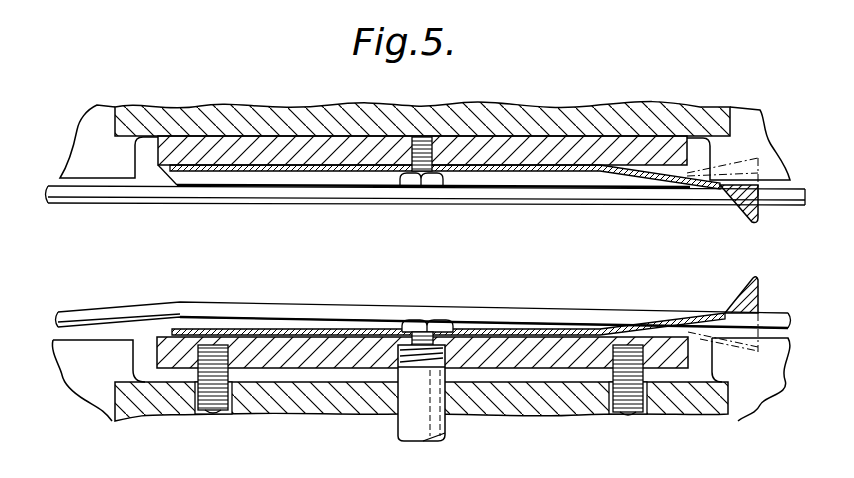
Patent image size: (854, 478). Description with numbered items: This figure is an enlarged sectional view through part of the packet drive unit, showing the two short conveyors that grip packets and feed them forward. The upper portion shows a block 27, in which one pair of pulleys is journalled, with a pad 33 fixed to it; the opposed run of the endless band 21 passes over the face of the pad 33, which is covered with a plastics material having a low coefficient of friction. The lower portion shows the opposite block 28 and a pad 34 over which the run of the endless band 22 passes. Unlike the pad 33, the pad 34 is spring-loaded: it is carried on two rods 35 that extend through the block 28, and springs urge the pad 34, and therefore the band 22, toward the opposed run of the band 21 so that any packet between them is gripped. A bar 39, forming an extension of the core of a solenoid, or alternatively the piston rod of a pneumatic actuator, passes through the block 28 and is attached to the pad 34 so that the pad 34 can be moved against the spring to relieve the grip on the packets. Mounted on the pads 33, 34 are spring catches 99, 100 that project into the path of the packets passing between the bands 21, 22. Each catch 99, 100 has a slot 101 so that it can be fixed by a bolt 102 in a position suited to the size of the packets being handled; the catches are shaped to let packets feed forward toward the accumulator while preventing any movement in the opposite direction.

The endless band 21 is at (167, 190).
The endless band 22 is at (270, 312).
The block 27 is at (743, 122).
The block 28 is at (758, 363).
The pad 33 is at (188, 140).
The pad 34 is at (288, 358).
The rods 35 is at (203, 408).
The bar 39 is at (400, 425).
The spring catch 99 is at (742, 202).
The spring catch 100 is at (737, 302).
The slot 101 is at (457, 170).
The bolt 102 is at (432, 187).